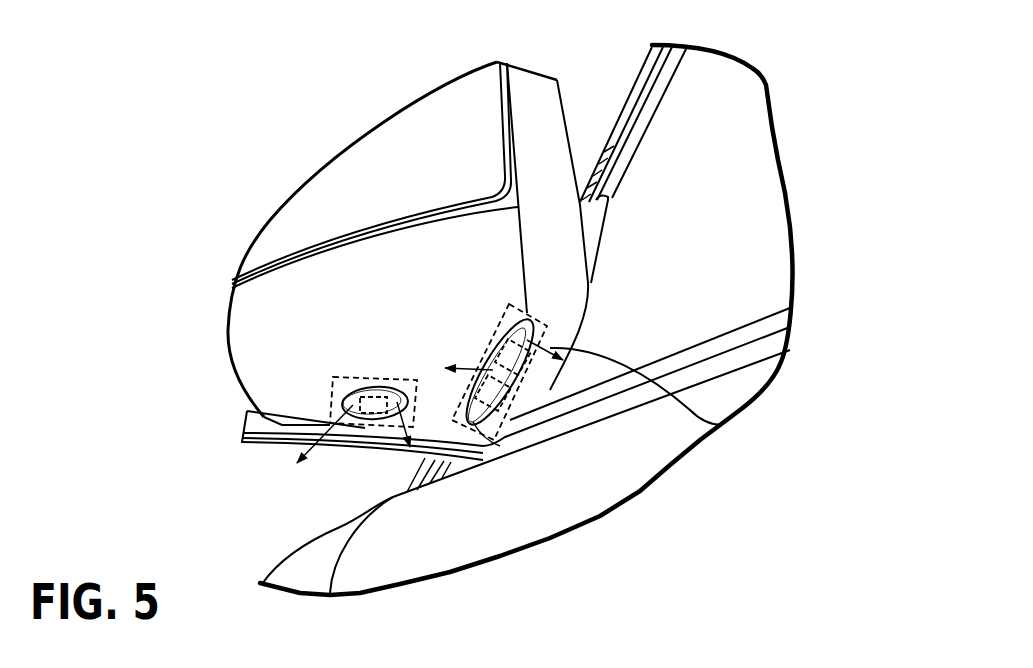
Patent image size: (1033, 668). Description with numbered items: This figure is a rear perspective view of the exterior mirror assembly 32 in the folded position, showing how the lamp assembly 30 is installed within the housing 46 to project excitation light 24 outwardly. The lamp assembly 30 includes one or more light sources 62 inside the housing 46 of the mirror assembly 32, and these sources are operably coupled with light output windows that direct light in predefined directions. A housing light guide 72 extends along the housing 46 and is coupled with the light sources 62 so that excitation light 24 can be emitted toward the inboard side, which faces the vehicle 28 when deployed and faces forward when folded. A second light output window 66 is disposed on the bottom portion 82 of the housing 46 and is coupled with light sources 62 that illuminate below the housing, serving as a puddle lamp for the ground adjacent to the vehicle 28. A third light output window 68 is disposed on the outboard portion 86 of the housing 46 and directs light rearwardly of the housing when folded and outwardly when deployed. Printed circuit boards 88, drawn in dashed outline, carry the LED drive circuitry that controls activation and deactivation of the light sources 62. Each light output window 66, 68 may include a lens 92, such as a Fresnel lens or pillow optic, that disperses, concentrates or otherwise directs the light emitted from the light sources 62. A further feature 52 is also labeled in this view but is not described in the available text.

The excitation light 24 is at (722, 425).
The vehicle 28 is at (712, 41).
The lamp assembly 30 is at (515, 419).
The mirror assembly 32 is at (297, 196).
The housing 46 is at (445, 120).
The edge 52 is at (592, 185).
The light sources 62 is at (300, 467).
The second light output window 66 is at (345, 393).
The third light output window 68 is at (543, 312).
The housing light guide 72 is at (257, 267).
The bottom portion 82 is at (372, 442).
The outboard portion 86 is at (565, 233).
The printed circuit boards 88 is at (550, 333).
The lens 92 is at (481, 414).